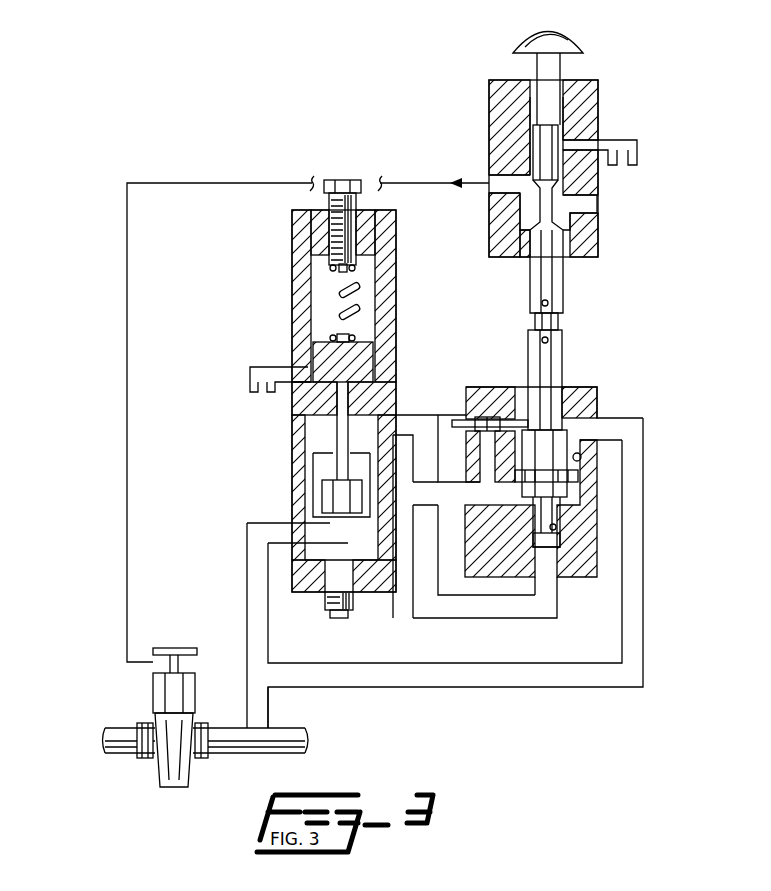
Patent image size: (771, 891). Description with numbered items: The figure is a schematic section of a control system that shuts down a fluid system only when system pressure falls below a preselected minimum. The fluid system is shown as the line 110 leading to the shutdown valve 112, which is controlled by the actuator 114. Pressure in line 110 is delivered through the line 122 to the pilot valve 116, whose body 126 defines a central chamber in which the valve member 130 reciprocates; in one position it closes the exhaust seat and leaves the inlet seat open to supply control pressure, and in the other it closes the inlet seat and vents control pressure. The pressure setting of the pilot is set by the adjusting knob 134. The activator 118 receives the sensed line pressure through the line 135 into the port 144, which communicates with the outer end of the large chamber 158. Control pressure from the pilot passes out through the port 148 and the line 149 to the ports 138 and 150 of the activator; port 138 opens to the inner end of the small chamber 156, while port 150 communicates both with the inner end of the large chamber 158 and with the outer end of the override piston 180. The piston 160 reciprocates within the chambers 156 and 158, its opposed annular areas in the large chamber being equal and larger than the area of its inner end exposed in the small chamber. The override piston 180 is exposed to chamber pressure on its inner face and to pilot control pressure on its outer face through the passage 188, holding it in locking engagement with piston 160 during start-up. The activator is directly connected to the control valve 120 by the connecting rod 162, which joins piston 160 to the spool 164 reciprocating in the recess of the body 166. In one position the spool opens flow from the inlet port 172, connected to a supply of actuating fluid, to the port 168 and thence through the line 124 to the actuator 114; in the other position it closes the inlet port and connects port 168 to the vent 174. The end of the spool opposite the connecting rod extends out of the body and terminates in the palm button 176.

The line 110 is at (115, 755).
The shutdown valve 112 is at (175, 788).
The actuator 114 is at (153, 690).
The pilot valve 116 is at (292, 592).
The activator 118 is at (597, 577).
The control valve 120 is at (598, 257).
The line 122 is at (268, 713).
The line 124 is at (183, 183).
The body 126 is at (355, 602).
The valve member 130 is at (325, 490).
The adjusting knob 134 is at (345, 185).
The line 135 is at (643, 640).
The port 138 is at (560, 585).
The port 144 is at (605, 420).
The port 148 is at (440, 414).
The line 149 is at (455, 622).
The port 150 is at (400, 570).
The small chamber 156 is at (565, 536).
The large chamber 158 is at (578, 460).
The piston 160 is at (578, 479).
The connecting rod 162 is at (563, 322).
The spool 164 is at (530, 278).
The body 166 is at (500, 90).
The port 168 is at (487, 181).
The inlet port 172 is at (580, 213).
The vent 174 is at (640, 148).
The palm button 176 is at (550, 40).
The override piston 180 is at (527, 435).
The passage 188 is at (462, 424).